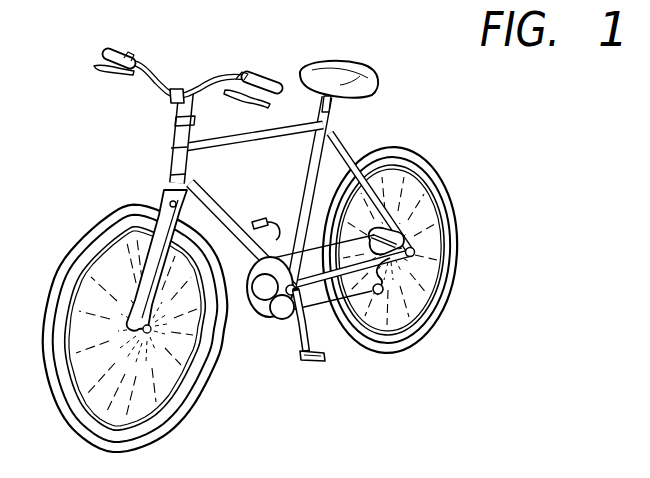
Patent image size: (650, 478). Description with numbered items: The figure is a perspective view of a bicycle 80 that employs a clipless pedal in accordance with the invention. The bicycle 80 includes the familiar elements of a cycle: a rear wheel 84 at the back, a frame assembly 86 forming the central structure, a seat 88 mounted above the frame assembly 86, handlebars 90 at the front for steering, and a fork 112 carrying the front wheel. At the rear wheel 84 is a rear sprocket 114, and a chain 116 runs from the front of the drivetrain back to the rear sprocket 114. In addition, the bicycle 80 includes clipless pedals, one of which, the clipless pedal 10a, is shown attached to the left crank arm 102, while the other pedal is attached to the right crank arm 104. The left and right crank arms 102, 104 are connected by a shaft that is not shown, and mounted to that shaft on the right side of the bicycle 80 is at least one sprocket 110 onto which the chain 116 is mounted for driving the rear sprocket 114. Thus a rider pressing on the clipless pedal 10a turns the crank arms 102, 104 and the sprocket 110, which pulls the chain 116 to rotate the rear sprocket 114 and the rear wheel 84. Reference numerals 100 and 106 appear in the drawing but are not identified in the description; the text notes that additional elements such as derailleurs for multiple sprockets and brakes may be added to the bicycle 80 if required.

The bicycle 80 is at (146, 132).
The rear wheel 84 is at (447, 252).
The frame assembly 86 is at (313, 122).
The seat 88 is at (343, 68).
The handlebars 90 is at (162, 75).
The crank assembly 100 is at (279, 313).
The left crank arm 102 is at (310, 333).
The clipless pedal 10a is at (319, 361).
The right crank arm 104 is at (277, 230).
The mount 106 is at (260, 220).
The sprocket 110 is at (253, 307).
The fork 112 is at (141, 279).
The rear sprocket 114 is at (404, 231).
The chain 116 is at (371, 294).